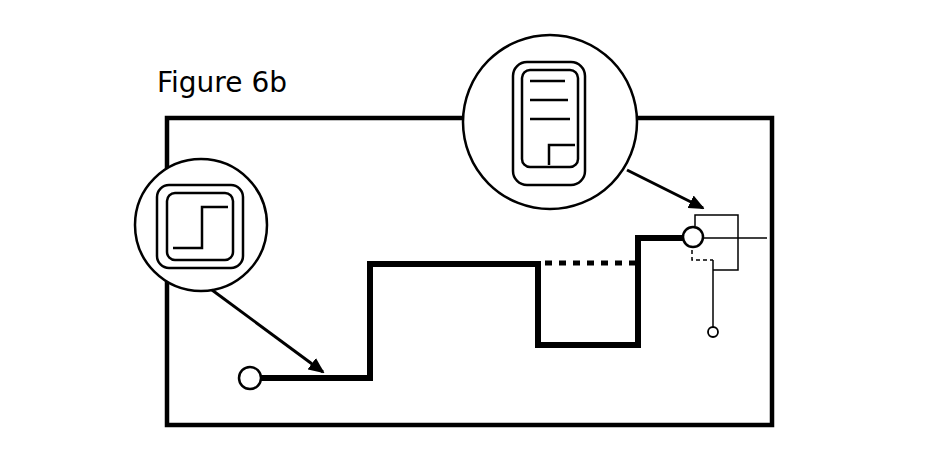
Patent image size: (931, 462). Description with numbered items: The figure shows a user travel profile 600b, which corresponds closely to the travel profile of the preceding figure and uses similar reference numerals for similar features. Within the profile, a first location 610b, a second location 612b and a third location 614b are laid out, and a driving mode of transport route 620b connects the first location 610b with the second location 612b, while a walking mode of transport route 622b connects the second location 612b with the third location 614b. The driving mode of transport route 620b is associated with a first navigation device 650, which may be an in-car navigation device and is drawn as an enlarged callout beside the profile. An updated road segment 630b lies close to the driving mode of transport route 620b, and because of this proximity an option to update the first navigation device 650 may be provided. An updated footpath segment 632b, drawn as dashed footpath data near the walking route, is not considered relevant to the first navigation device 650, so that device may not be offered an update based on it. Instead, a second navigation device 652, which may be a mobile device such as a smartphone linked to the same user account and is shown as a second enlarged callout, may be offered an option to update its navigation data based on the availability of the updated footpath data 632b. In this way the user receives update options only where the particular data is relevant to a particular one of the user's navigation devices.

The user travel profile 600b is at (108, 278).
The first location 610b is at (247, 375).
The second location 612b is at (683, 232).
The third location 614b is at (710, 337).
The driving mode of transport route 620b is at (363, 272).
The walking mode of transport route 622b is at (742, 223).
The updated road segment 630b is at (550, 267).
The updated footpath segment 632b is at (700, 262).
The first navigation device 650 is at (178, 202).
The second navigation device 652 is at (560, 92).